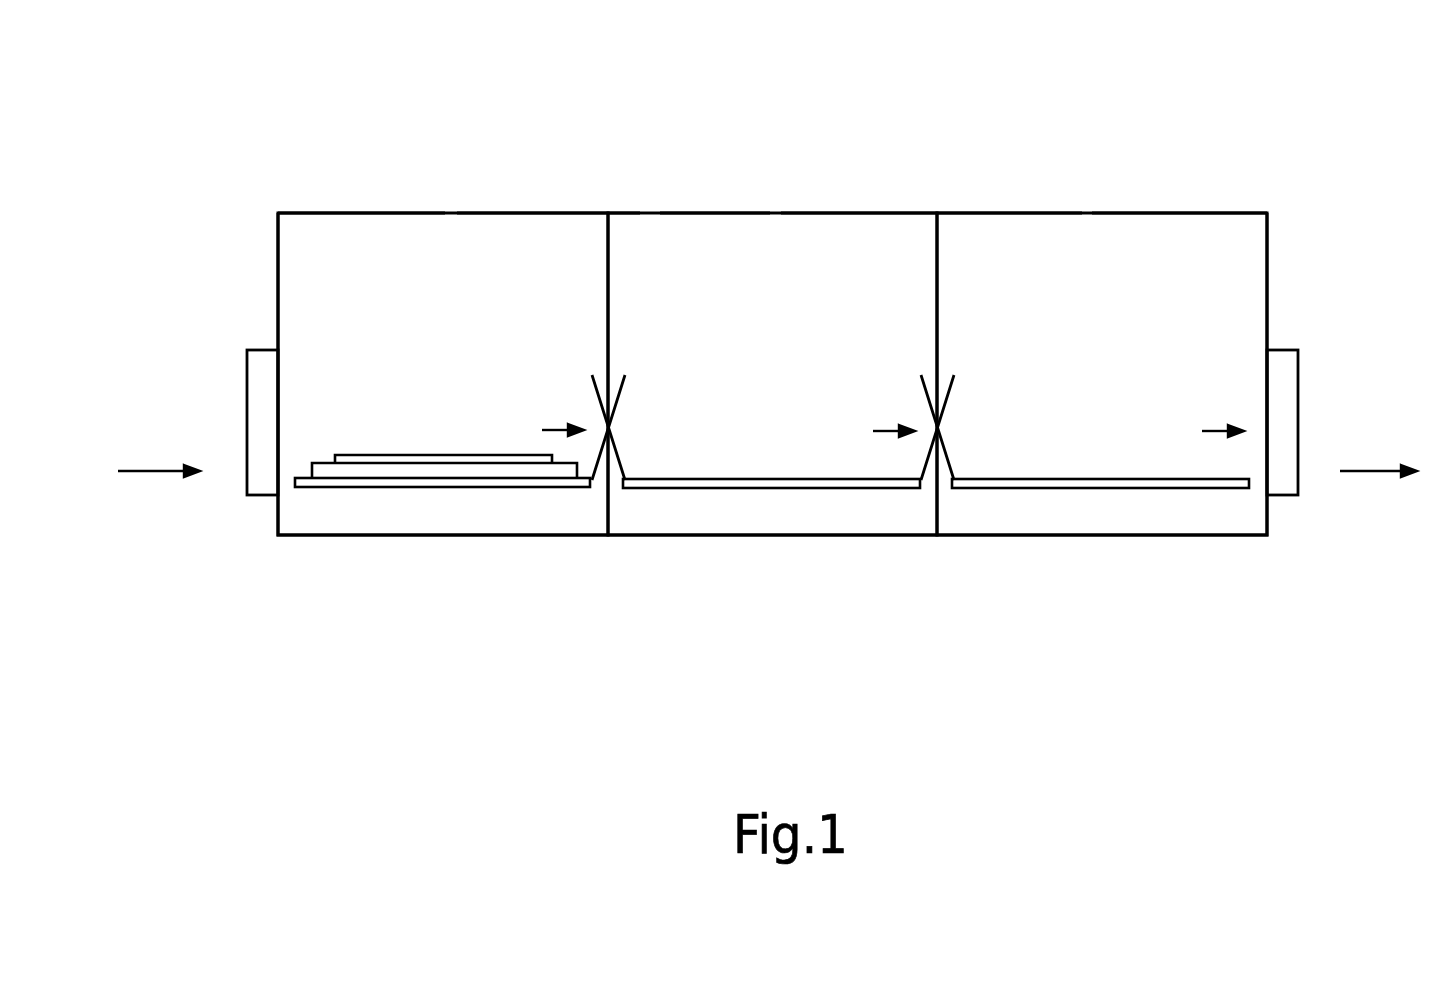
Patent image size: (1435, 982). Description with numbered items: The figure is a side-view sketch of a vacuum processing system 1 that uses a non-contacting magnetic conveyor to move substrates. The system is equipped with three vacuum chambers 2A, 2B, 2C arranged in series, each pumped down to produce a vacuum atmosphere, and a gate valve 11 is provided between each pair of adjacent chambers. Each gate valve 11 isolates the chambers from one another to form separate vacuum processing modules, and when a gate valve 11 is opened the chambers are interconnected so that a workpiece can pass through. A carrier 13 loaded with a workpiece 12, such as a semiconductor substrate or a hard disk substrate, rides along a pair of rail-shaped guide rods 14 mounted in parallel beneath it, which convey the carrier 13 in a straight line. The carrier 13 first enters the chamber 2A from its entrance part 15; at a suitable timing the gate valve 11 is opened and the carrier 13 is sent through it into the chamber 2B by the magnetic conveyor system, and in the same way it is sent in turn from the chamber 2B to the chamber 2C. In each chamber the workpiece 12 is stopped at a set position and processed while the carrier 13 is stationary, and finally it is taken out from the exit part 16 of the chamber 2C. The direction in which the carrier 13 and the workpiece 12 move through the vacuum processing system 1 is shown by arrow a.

The vacuum processing system 1 is at (655, 254).
The vacuum chamber 2A is at (453, 238).
The vacuum chamber 2B is at (777, 233).
The vacuum chamber 2C is at (1087, 230).
The gate valve 11 is at (623, 387).
The workpiece 12 is at (470, 460).
The carrier 13 is at (362, 472).
The guide rod 14 is at (443, 481).
The entrance part 15 is at (253, 378).
The exit part 16 is at (1300, 372).
The arrow a is at (166, 471).